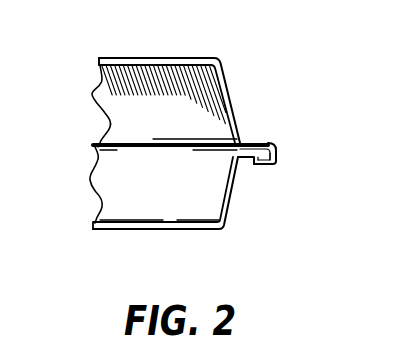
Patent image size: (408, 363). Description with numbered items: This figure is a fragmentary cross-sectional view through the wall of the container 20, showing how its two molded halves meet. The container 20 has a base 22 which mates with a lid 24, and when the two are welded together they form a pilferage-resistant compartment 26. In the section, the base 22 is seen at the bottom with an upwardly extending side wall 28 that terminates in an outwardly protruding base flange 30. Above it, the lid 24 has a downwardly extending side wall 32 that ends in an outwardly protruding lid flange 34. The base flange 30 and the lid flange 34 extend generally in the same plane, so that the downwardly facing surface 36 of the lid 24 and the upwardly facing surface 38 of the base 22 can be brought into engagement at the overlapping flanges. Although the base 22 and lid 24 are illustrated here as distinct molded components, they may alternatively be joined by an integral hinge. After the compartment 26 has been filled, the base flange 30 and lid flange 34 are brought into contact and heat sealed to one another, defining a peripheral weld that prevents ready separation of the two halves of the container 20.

The container 20 is at (253, 68).
The base 22 is at (120, 230).
The lid 24 is at (157, 58).
The pilferage-resistant compartment 26 is at (92, 93).
The side wall 28 is at (234, 187).
The base flange 30 is at (263, 164).
The side wall 32 is at (237, 117).
The lid flange 34 is at (267, 141).
The downwardly facing surface 36 is at (185, 68).
The upwardly facing surface 38 is at (163, 221).